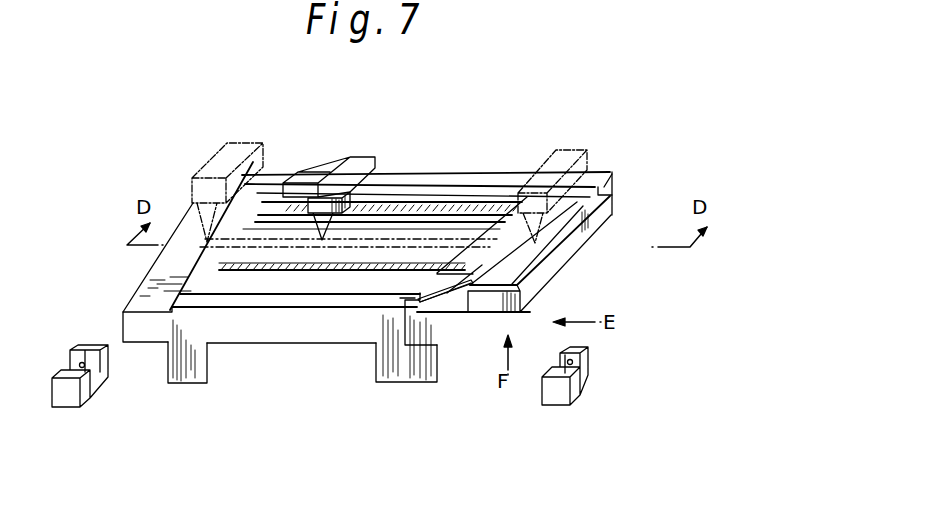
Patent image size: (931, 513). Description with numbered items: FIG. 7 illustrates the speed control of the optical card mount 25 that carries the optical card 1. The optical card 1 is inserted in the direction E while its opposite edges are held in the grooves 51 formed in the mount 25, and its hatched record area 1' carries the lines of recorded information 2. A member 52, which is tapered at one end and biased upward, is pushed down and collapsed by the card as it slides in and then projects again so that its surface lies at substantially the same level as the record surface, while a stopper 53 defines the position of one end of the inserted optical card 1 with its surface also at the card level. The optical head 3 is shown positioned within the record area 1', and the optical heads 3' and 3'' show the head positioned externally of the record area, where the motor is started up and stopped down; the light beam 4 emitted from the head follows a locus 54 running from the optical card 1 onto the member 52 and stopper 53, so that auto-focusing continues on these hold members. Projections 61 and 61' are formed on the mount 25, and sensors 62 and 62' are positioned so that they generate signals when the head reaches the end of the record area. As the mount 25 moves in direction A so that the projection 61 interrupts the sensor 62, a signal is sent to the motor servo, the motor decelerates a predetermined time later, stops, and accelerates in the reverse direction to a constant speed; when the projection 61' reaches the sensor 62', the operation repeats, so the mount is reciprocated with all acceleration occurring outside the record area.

The optical card 1 is at (451, 320).
The record area 1' is at (405, 147).
The lines of recorded information 2 is at (393, 213).
The optical head 3 is at (336, 145).
The optical head 3' is at (227, 163).
The optical head 3'' is at (560, 165).
The light beam 4 is at (322, 237).
The optical card mount 25 is at (233, 330).
The grooves 51 is at (612, 195).
The member 52 is at (540, 228).
The stopper 53 is at (263, 188).
The locus of the light beam 54 is at (210, 255).
The projection 61 is at (404, 376).
The projection 61' is at (187, 378).
The sensor 62 is at (565, 404).
The sensor 62' is at (80, 403).